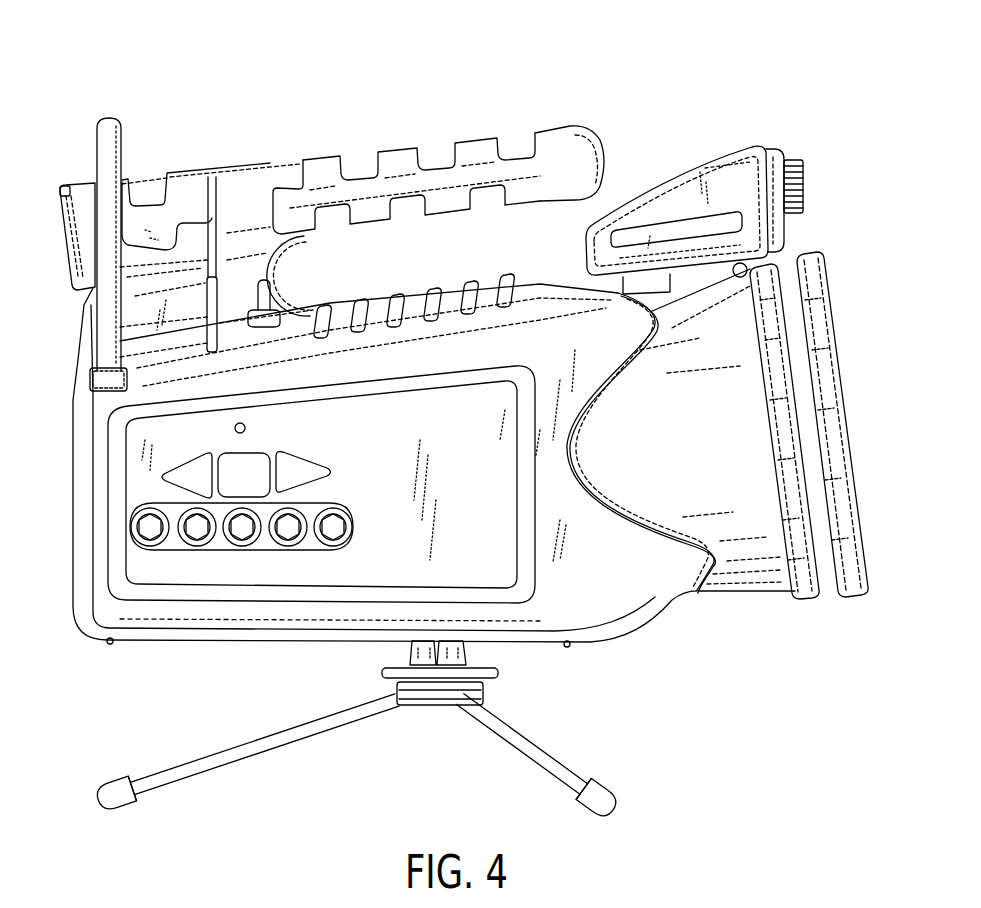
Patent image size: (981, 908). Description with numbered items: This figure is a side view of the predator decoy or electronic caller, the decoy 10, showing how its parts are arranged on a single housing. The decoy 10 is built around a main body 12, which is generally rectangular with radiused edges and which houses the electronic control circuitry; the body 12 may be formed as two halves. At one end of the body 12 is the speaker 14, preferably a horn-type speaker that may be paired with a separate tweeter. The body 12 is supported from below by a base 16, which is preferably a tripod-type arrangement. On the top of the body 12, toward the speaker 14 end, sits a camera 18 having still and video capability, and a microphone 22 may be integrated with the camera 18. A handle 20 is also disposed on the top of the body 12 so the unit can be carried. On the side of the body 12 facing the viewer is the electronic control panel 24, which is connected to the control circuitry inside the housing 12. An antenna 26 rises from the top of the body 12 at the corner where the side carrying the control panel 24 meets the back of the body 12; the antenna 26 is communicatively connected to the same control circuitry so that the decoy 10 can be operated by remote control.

The decoy 10 is at (138, 49).
The main body 12 is at (71, 642).
The speaker 14 is at (854, 372).
The base 16 is at (594, 757).
The camera 18 is at (759, 138).
The handle 20 is at (288, 156).
The microphone 22 is at (692, 151).
The electronic control panel 24 is at (394, 484).
The antenna 26 is at (102, 172).